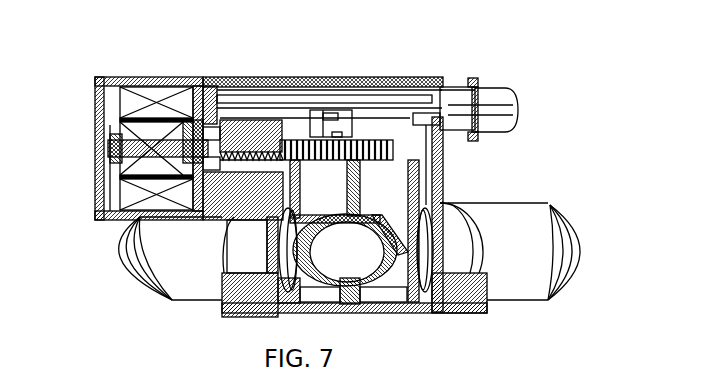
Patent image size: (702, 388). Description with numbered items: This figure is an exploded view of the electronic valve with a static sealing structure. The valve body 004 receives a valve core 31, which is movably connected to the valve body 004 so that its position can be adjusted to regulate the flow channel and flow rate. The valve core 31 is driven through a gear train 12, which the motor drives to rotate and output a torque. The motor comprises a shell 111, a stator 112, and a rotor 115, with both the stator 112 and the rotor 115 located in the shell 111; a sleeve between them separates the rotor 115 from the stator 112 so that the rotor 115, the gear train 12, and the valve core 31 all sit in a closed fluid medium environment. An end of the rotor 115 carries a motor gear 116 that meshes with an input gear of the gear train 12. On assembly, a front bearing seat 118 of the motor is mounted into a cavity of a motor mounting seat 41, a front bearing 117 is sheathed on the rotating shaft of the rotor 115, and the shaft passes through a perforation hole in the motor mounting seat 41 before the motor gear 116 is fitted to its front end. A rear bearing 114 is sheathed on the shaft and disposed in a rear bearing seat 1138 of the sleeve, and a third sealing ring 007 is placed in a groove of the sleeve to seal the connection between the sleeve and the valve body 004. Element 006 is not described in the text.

The shell 111 is at (94, 112).
The stator 112 is at (122, 86).
The rear bearing 114 is at (125, 117).
The rotor 115 is at (160, 126).
The third sealing ring 007 is at (199, 108).
The front bearing seat 118 is at (221, 110).
The motor mounting seat 41 is at (232, 124).
The motor gear 116 is at (282, 129).
The gear train 12 is at (343, 132).
The valve body 004 is at (418, 77).
The valve core 31 is at (445, 122).
The sensor 006 is at (496, 98).
The rear bearing seat 1138 is at (104, 157).
The front bearing 117 is at (200, 160).